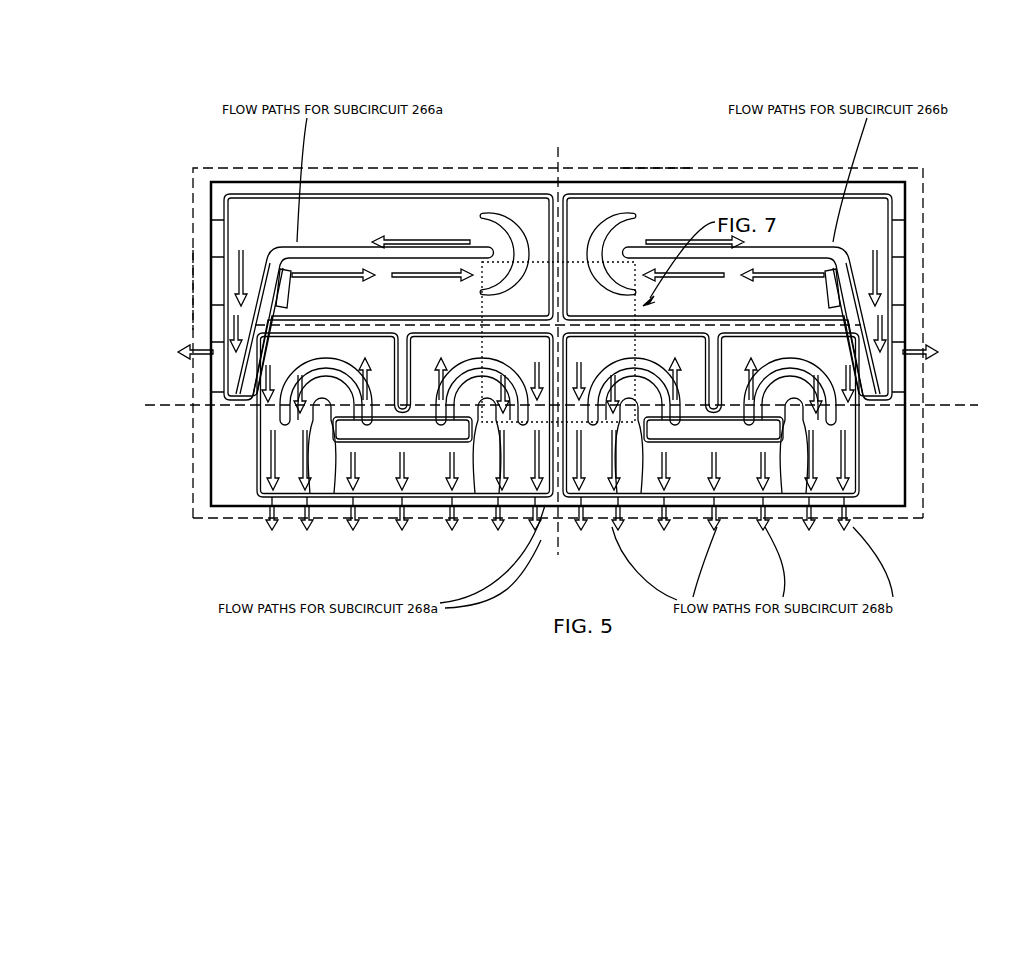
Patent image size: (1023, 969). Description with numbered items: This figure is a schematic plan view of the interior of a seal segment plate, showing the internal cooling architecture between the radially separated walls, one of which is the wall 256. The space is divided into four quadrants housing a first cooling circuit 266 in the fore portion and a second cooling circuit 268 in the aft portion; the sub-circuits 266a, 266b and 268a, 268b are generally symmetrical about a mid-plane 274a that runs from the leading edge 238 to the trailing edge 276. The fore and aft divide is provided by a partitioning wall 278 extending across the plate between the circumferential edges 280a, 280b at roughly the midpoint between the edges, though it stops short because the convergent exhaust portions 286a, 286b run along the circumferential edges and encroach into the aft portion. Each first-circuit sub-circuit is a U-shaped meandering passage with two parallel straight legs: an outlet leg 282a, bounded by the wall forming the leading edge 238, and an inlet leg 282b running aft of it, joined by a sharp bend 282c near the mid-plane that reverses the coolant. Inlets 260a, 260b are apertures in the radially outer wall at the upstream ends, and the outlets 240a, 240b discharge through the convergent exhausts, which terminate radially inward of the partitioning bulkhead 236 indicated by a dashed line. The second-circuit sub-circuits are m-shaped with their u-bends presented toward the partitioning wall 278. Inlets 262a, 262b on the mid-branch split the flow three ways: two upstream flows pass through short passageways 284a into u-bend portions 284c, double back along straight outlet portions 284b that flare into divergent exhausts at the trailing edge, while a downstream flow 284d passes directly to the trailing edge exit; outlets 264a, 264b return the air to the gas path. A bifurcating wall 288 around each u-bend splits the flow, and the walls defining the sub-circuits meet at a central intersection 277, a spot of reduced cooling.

The partitioning bulkhead 236 is at (915, 407).
The leading edge 238 is at (385, 178).
The outlet of first sub-circuit 240a is at (217, 347).
The outlet of second sub-circuit 240b is at (900, 308).
The radially inner wall 256 is at (877, 220).
The inlet of first sub-circuit 260a is at (290, 285).
The inlet of second sub-circuit 260b is at (826, 285).
The inlet of first aft sub-circuit 262a is at (403, 477).
The inlet of second aft sub-circuit 262b is at (787, 445).
The outlet of first aft sub-circuit 264a is at (270, 507).
The outlet of second aft sub-circuit 264b is at (720, 500).
The first cooling circuit 266 is at (806, 176).
The first sub-circuit of first cooling circuit 266a is at (193, 283).
The second sub-circuit of first cooling circuit 266b is at (652, 170).
The second cooling circuit 268 is at (329, 523).
The first sub-circuit of second cooling circuit 268a is at (430, 517).
The second sub-circuit of second cooling circuit 268b is at (640, 512).
The mid-plane 274a is at (557, 183).
The trailing edge 276 is at (552, 500).
The intersection 277 is at (641, 220).
The partitioning wall 278 is at (283, 323).
The first circumferential edge 280a is at (268, 420).
The second circumferential edge 280b is at (907, 362).
The outlet leg 282a is at (406, 232).
The inlet leg 282b is at (466, 296).
The sharp bend 282c is at (532, 222).
The upstream passageway 284a is at (312, 432).
The straight outlet portion 284b is at (337, 413).
The u-bend portion 284c is at (497, 538).
The downstream flow 284d is at (402, 445).
The convergent exhaust portion 286a is at (252, 235).
The convergent exhaust portion 286b is at (880, 280).
The bifurcating wall 288 is at (286, 380).